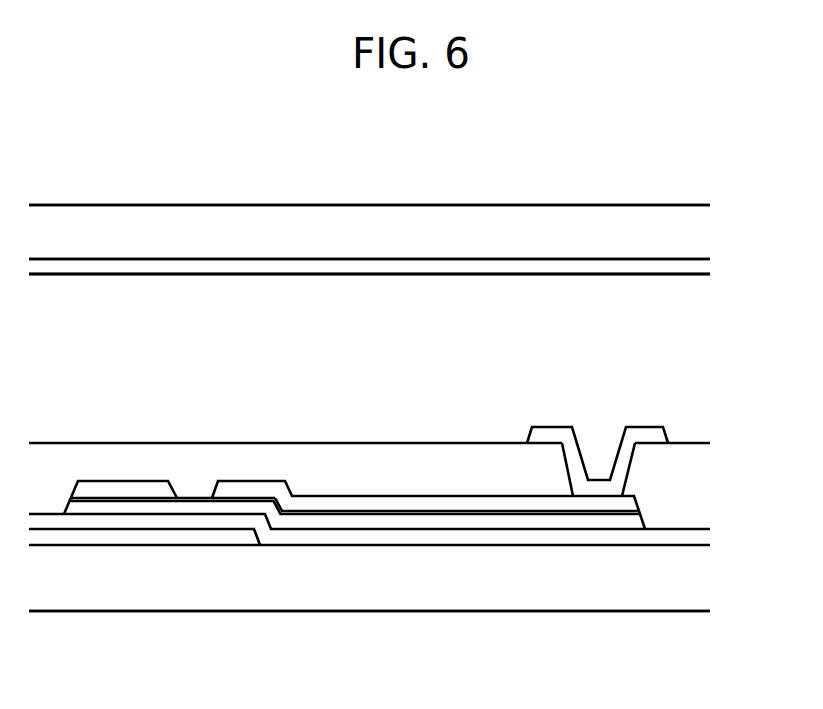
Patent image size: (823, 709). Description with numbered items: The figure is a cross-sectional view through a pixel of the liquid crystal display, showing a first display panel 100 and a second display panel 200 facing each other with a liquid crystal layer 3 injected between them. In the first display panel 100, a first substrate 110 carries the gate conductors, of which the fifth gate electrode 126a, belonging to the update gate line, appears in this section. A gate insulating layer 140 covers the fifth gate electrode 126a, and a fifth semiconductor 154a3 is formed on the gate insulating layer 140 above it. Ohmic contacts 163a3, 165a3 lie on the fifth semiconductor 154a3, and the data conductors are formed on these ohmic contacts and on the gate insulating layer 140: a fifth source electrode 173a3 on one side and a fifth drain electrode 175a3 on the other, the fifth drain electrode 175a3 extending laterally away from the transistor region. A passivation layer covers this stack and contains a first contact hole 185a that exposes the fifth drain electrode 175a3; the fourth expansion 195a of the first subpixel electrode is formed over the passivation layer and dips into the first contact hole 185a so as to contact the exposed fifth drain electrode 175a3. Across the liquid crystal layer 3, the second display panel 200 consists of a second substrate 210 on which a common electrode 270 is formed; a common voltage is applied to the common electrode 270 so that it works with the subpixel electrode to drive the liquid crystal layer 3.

The liquid crystal layer 3 is at (723, 274).
The first display panel 100 is at (723, 427).
The first substrate 110 is at (640, 573).
The fifth gate electrode 126a is at (190, 540).
The gate insulating layer 140 is at (425, 540).
The fifth semiconductor 154a3 is at (279, 520).
The ohmic contact 163a3 is at (86, 498).
The ohmic contact 165a3 is at (346, 511).
The fifth source electrode 173a3 is at (123, 487).
The fifth drain electrode 175a3 is at (501, 505).
The first contact hole 185a is at (566, 455).
The fourth expansion 195a is at (642, 435).
The second display panel 200 is at (723, 205).
The second substrate 210 is at (567, 235).
The common electrode 270 is at (488, 268).